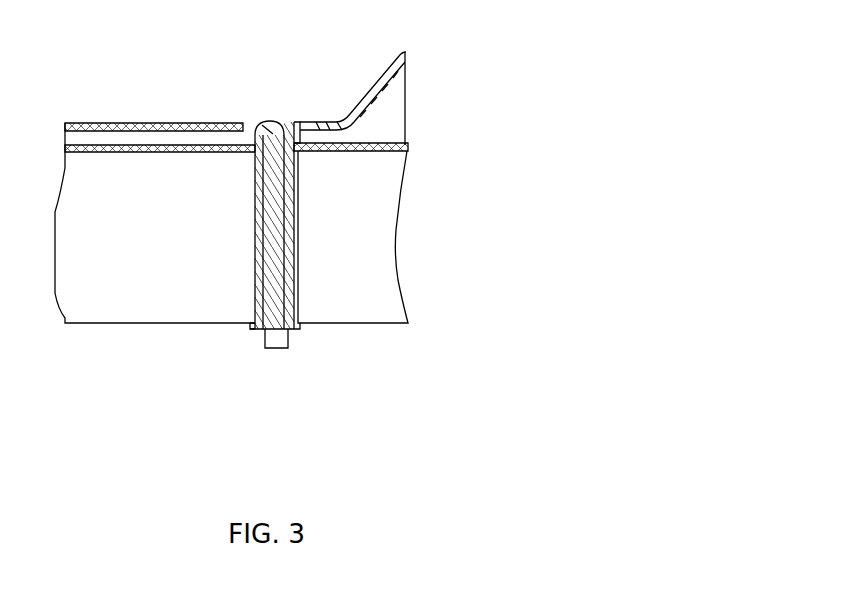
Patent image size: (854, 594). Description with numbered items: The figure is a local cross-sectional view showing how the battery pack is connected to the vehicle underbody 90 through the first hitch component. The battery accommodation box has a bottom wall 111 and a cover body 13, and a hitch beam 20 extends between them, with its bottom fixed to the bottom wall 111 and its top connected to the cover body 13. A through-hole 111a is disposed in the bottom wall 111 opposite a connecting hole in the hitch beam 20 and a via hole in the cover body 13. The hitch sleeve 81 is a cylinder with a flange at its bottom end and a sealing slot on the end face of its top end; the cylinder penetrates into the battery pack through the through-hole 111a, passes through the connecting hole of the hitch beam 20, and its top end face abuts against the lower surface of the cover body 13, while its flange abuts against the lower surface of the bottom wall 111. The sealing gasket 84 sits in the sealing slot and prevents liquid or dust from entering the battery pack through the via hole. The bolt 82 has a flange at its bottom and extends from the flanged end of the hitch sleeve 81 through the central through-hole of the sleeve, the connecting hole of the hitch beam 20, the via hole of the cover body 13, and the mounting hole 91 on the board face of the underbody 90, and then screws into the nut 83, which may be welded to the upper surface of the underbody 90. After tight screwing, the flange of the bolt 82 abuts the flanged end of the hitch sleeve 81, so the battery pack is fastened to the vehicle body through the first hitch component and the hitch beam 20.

The bottom wall 111 is at (170, 324).
The through-hole 111a is at (252, 321).
The hitch beam 20 is at (406, 158).
The cover body 13 is at (397, 147).
The underbody 90 is at (406, 53).
The hitch sleeve 81 is at (291, 255).
The mounting hole 91 is at (253, 127).
The nut 83 is at (288, 140).
The sealing gasket 84 is at (293, 140).
The bolt 82 is at (278, 338).